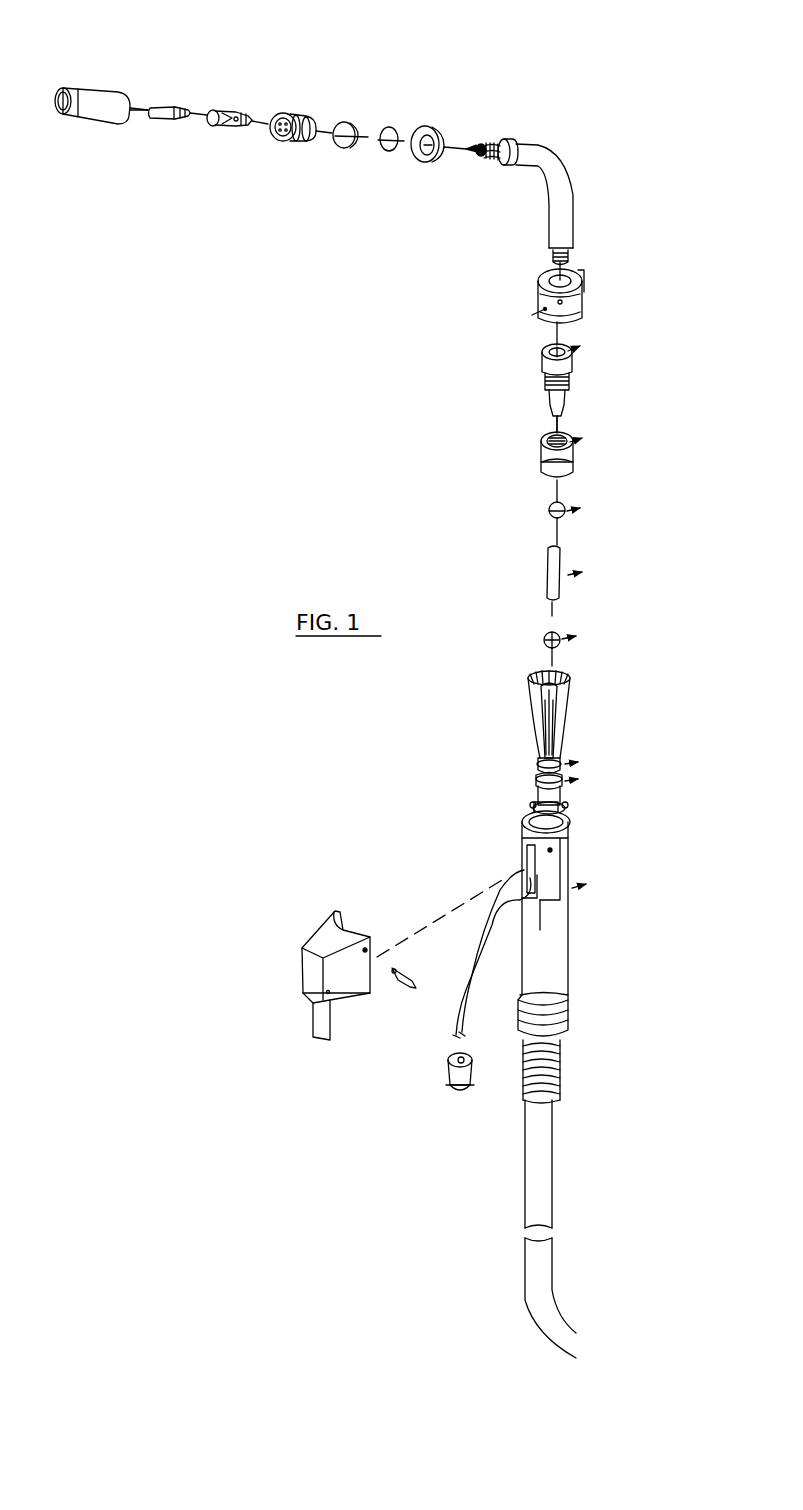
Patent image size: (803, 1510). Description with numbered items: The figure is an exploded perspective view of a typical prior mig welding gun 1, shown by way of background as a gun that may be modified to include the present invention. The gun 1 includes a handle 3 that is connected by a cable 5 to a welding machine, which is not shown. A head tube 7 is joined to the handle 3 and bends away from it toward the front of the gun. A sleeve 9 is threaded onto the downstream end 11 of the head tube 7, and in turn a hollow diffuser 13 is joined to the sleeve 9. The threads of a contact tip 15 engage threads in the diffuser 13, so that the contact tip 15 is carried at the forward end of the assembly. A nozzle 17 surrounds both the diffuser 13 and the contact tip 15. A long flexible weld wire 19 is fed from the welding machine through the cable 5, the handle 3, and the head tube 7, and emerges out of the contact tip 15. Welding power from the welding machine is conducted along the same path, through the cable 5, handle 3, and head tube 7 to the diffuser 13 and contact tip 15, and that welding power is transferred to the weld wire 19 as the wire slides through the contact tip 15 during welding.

The mig welding gun 1 is at (414, 353).
The handle 3 is at (545, 955).
The cable 5 is at (545, 1143).
The head tube 7 is at (553, 150).
The sleeve 9 is at (300, 117).
The downstream end 11 is at (489, 142).
The diffuser 13 is at (241, 110).
The contact tip 15 is at (176, 104).
The nozzle 17 is at (104, 86).
The weld wire 19 is at (143, 112).